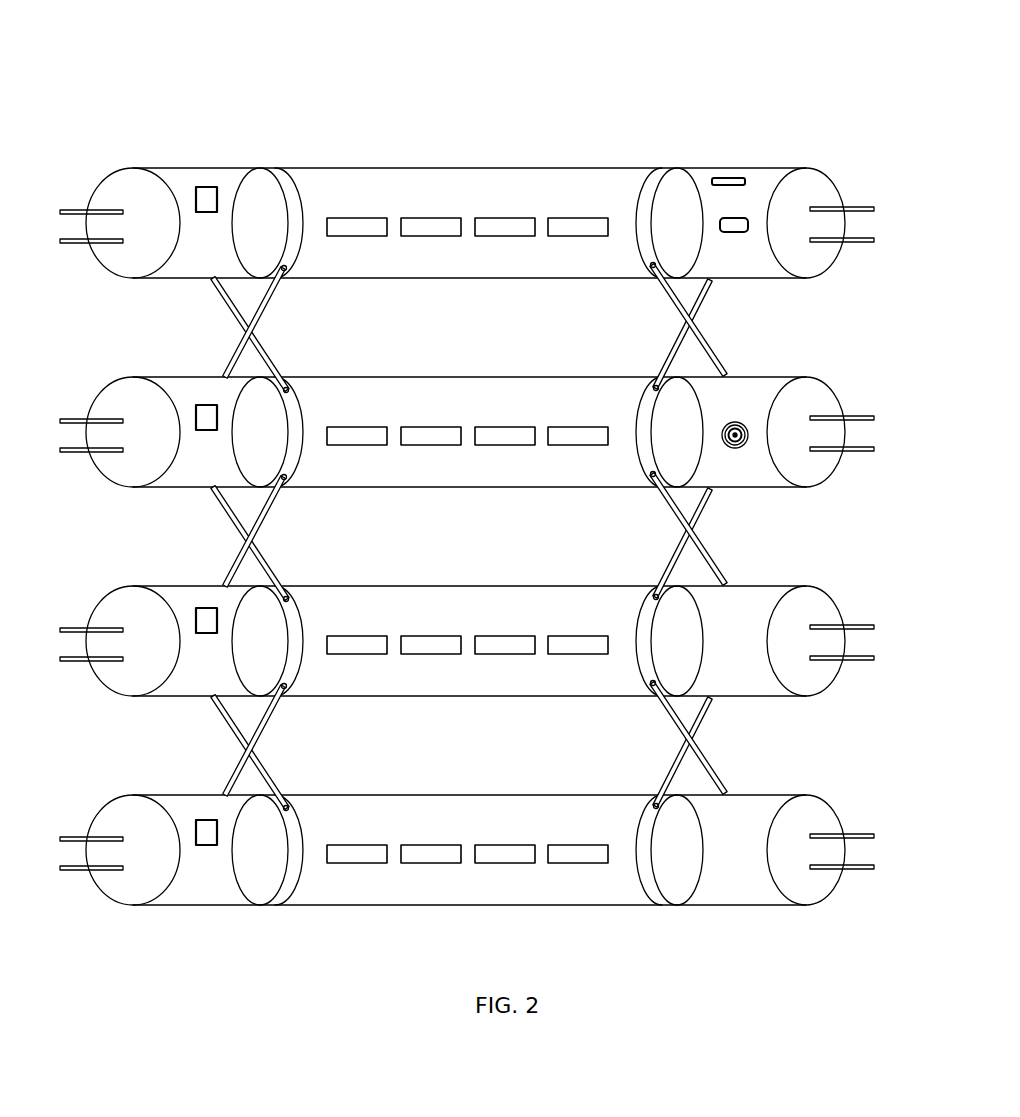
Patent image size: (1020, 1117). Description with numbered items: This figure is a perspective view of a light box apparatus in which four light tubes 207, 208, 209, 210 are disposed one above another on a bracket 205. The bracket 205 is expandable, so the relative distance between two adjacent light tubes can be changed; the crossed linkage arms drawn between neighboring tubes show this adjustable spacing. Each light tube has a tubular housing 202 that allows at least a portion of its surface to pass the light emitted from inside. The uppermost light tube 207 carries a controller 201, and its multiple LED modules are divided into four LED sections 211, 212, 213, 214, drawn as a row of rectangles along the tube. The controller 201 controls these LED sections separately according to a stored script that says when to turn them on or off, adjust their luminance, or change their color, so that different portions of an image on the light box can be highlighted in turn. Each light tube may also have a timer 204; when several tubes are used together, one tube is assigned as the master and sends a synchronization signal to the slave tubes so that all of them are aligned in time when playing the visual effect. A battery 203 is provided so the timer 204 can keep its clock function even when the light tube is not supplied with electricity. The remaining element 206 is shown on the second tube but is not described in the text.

The controller 201 is at (206, 200).
The tubular housing 202 is at (405, 278).
The battery 203 is at (725, 178).
The timer 204 is at (748, 224).
The bracket 205 is at (697, 328).
The connector socket 206 is at (737, 449).
The light tube 207 is at (458, 184).
The light tube 208 is at (458, 468).
The light tube 209 is at (192, 680).
The light tube 210 is at (213, 885).
The LED section 211 is at (357, 218).
The LED section 212 is at (431, 218).
The LED section 213 is at (503, 222).
The LED section 214 is at (585, 218).